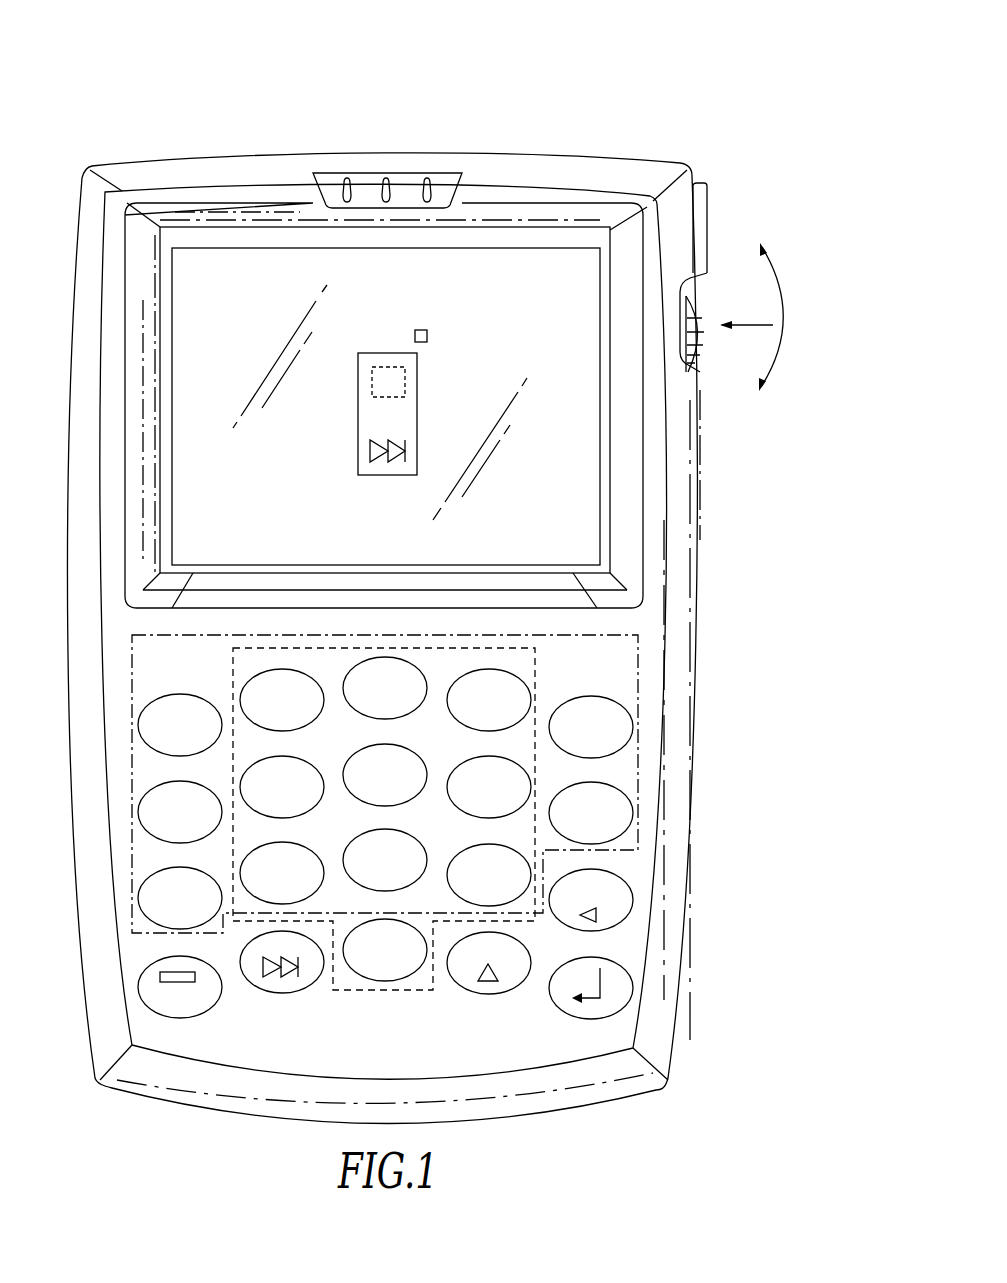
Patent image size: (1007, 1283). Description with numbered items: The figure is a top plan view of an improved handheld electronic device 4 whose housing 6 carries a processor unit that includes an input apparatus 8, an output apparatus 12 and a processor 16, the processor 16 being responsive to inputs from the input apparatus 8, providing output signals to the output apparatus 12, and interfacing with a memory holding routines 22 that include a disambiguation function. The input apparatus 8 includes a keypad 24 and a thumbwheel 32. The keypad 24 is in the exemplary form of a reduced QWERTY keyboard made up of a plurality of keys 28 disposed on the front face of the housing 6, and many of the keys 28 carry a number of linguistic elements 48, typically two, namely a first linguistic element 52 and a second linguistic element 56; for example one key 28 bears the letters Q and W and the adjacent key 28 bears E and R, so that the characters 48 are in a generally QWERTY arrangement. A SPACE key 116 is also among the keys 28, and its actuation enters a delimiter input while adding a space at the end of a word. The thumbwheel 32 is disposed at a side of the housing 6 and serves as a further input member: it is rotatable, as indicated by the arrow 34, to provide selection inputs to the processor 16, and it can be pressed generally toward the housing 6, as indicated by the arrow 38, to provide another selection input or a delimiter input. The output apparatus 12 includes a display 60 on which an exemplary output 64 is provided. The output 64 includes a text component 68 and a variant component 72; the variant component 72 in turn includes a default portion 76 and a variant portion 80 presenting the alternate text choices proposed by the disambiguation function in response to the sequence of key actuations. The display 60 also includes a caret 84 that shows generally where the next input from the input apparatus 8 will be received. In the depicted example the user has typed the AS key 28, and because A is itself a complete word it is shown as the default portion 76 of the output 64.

The handheld electronic device 4 is at (468, 102).
The housing 6 is at (583, 157).
The input apparatus 8 is at (657, 648).
The output apparatus 12 is at (462, 214).
The processor 16 is at (117, 662).
The routines 22 is at (113, 628).
The keypad 24 is at (645, 778).
The keys 28 is at (408, 846).
The thumbwheel 32 is at (700, 305).
The arrow 34 is at (785, 302).
The arrow 38 is at (748, 325).
The linguistic elements 48 is at (384, 762).
The first linguistic element 52 is at (178, 795).
The second linguistic element 56 is at (196, 820).
The display 60 is at (545, 153).
The output 64 is at (430, 354).
The text component 68 is at (400, 328).
The variant component 72 is at (358, 432).
The default portion 76 is at (370, 377).
The variant portion 80 is at (378, 415).
The caret 84 is at (420, 328).
The SPACE key 116 is at (435, 998).